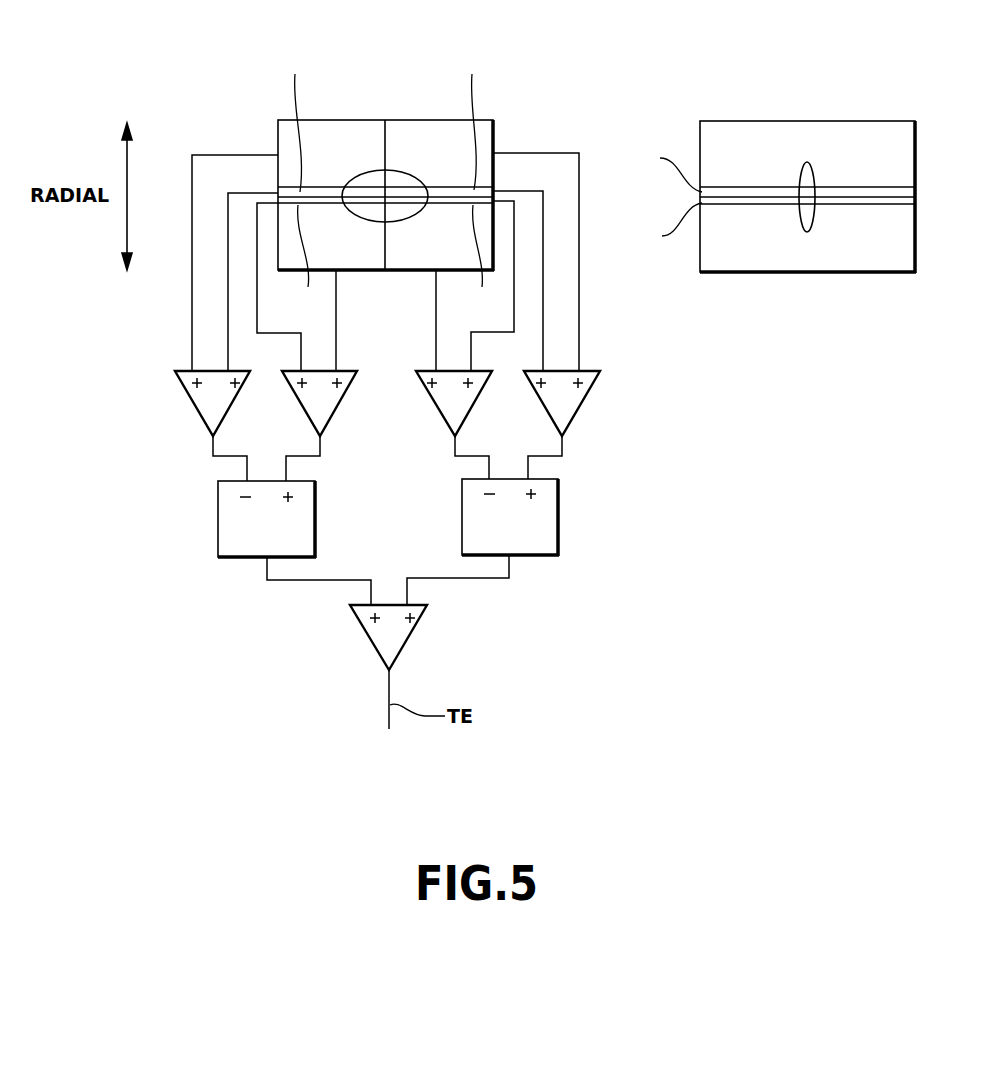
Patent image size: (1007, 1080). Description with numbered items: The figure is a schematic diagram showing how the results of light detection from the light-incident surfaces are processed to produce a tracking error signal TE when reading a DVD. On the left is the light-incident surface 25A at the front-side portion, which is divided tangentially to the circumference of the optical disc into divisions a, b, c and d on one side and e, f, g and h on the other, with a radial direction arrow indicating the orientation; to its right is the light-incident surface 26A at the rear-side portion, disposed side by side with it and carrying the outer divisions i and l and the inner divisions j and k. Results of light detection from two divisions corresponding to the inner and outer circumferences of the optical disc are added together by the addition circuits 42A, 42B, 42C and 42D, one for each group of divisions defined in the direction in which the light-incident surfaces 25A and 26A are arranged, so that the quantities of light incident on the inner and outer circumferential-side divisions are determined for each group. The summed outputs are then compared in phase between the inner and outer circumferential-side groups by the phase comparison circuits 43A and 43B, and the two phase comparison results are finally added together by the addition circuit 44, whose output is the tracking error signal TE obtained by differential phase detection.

The light-incident surface at the front-side portion 25A is at (410, 128).
The light-incident surface at the rear-side portion 26A is at (797, 127).
The addition circuit 42A is at (198, 403).
The addition circuit 42B is at (336, 405).
The addition circuit 42C is at (468, 404).
The addition circuit 42D is at (576, 405).
The phase comparison circuit 43A is at (308, 518).
The phase comparison circuit 43B is at (552, 516).
The addition circuit 44 is at (404, 643).